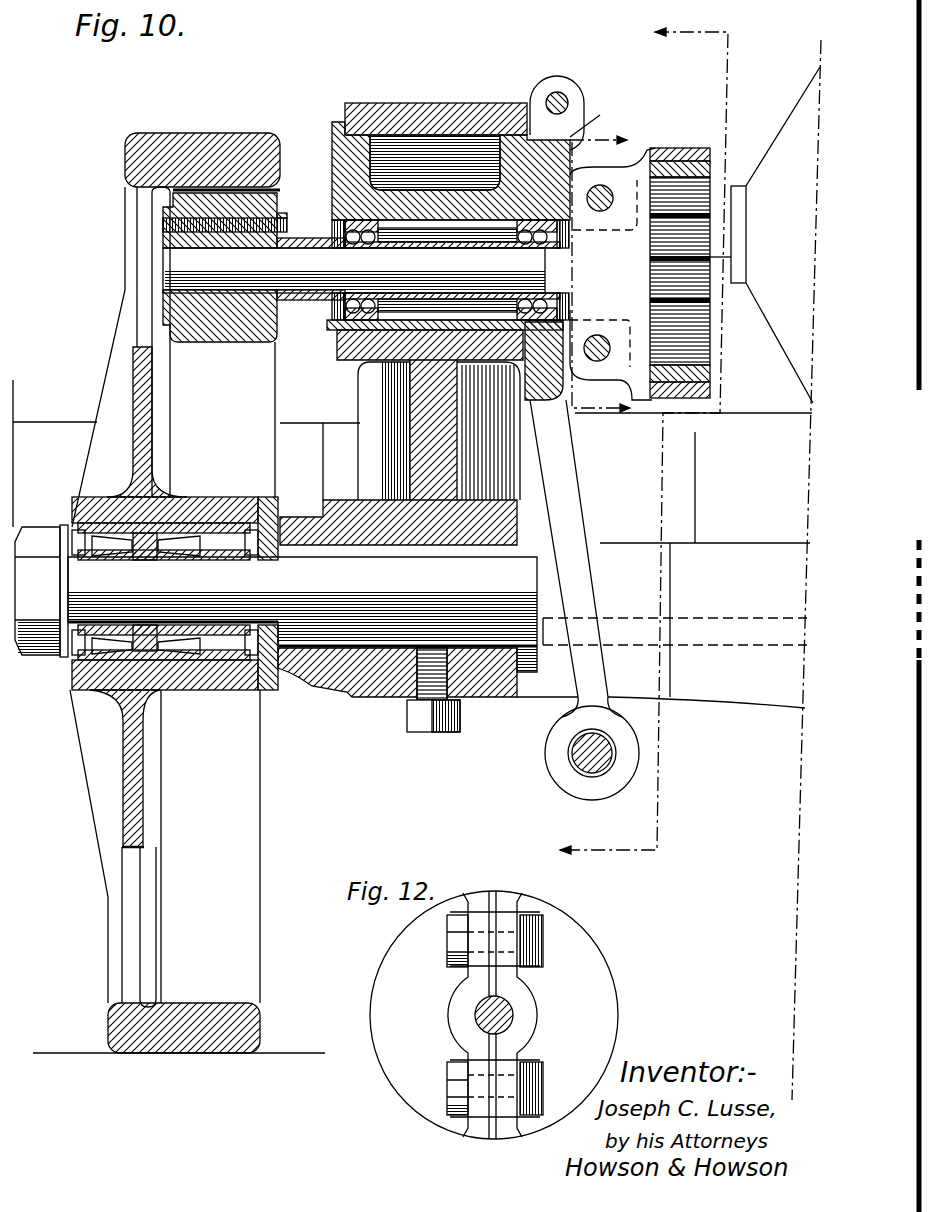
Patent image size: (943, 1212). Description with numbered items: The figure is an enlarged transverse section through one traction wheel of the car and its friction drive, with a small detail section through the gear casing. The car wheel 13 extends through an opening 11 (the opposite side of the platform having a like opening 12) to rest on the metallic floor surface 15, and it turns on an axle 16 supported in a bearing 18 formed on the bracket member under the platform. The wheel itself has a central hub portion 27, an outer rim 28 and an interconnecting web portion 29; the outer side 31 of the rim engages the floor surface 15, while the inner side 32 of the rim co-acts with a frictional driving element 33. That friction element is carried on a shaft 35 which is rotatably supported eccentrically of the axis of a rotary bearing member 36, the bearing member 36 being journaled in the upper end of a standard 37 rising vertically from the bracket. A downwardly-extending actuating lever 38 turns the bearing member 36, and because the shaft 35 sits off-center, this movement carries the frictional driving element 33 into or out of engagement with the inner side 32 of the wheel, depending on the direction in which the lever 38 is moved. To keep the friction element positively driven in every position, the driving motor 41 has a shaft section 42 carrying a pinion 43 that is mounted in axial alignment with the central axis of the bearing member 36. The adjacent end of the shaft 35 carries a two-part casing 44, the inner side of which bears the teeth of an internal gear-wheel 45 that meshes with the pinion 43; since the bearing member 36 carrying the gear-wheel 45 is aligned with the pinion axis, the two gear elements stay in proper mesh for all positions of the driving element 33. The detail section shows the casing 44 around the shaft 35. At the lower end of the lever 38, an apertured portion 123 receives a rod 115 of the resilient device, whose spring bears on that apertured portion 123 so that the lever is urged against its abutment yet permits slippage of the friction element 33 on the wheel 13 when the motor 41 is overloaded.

In FIG. 10, the opening 11 is at (750, 30).
In FIG. 10, the opening 12 is at (600, 271).
In FIG. 10, the car wheel 13 is at (208, 133).
In FIG. 10, the metallic floor surface 15 is at (283, 1053).
In FIG. 10, the axle 16 is at (302, 614).
In FIG. 10, the bearing 18 is at (358, 692).
In FIG. 10, the central hub portion 27 is at (170, 667).
In FIG. 10, the outer rim 28 is at (152, 136).
In FIG. 10, the web portion 29 is at (133, 382).
In FIG. 10, the outer side of the rim 31 is at (193, 1053).
In FIG. 10, the inner side of the rim 32 is at (230, 185).
In FIG. 10, the frictional driving element 33 is at (230, 328).
In FIG. 10, the shaft 35 is at (354, 269).
In FIG. 12, the shaft 35 is at (513, 1017).
In FIG. 10, the rotary bearing member 36 is at (332, 152).
In FIG. 10, the standard 37 is at (445, 94).
In FIG. 10, the actuating lever 38 is at (570, 472).
In FIG. 10, the driving motor 41 is at (800, 108).
In FIG. 10, the shaft section 42 is at (717, 217).
In FIG. 10, the pinion 43 is at (707, 235).
In FIG. 10, the two-part casing 44 is at (634, 254).
In FIG. 12, the two-part casing 44 is at (571, 918).
In FIG. 10, the internal gear-wheel 45 is at (707, 333).
In FIG. 10, the rod 115 is at (587, 778).
In FIG. 10, the apertured portion 123 is at (620, 780).